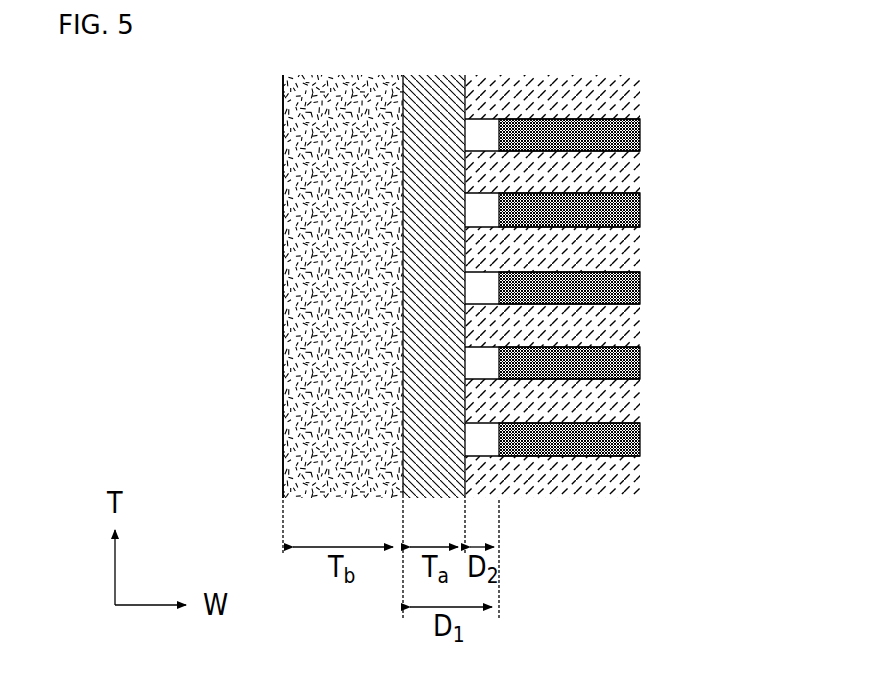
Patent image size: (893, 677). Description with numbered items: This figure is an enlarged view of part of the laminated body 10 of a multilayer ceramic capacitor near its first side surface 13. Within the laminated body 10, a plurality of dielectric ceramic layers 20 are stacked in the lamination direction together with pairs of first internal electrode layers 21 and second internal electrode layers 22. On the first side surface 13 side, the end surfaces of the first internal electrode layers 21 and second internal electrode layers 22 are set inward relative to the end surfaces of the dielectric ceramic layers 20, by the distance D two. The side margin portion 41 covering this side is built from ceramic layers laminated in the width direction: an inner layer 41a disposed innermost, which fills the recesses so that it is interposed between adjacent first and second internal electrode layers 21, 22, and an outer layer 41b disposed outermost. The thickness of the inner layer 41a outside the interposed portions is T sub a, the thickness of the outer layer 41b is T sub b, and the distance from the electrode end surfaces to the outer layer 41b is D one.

The laminated body 10 is at (669, 100).
The first side surface 13 is at (283, 296).
The dielectric ceramic layers 20 is at (628, 172).
The first internal electrode layers 21 is at (627, 137).
The second internal electrode layers 22 is at (627, 212).
The side margin portion 41 is at (175, 85).
The inner layer 41a is at (428, 203).
The outer layer 41b is at (303, 111).